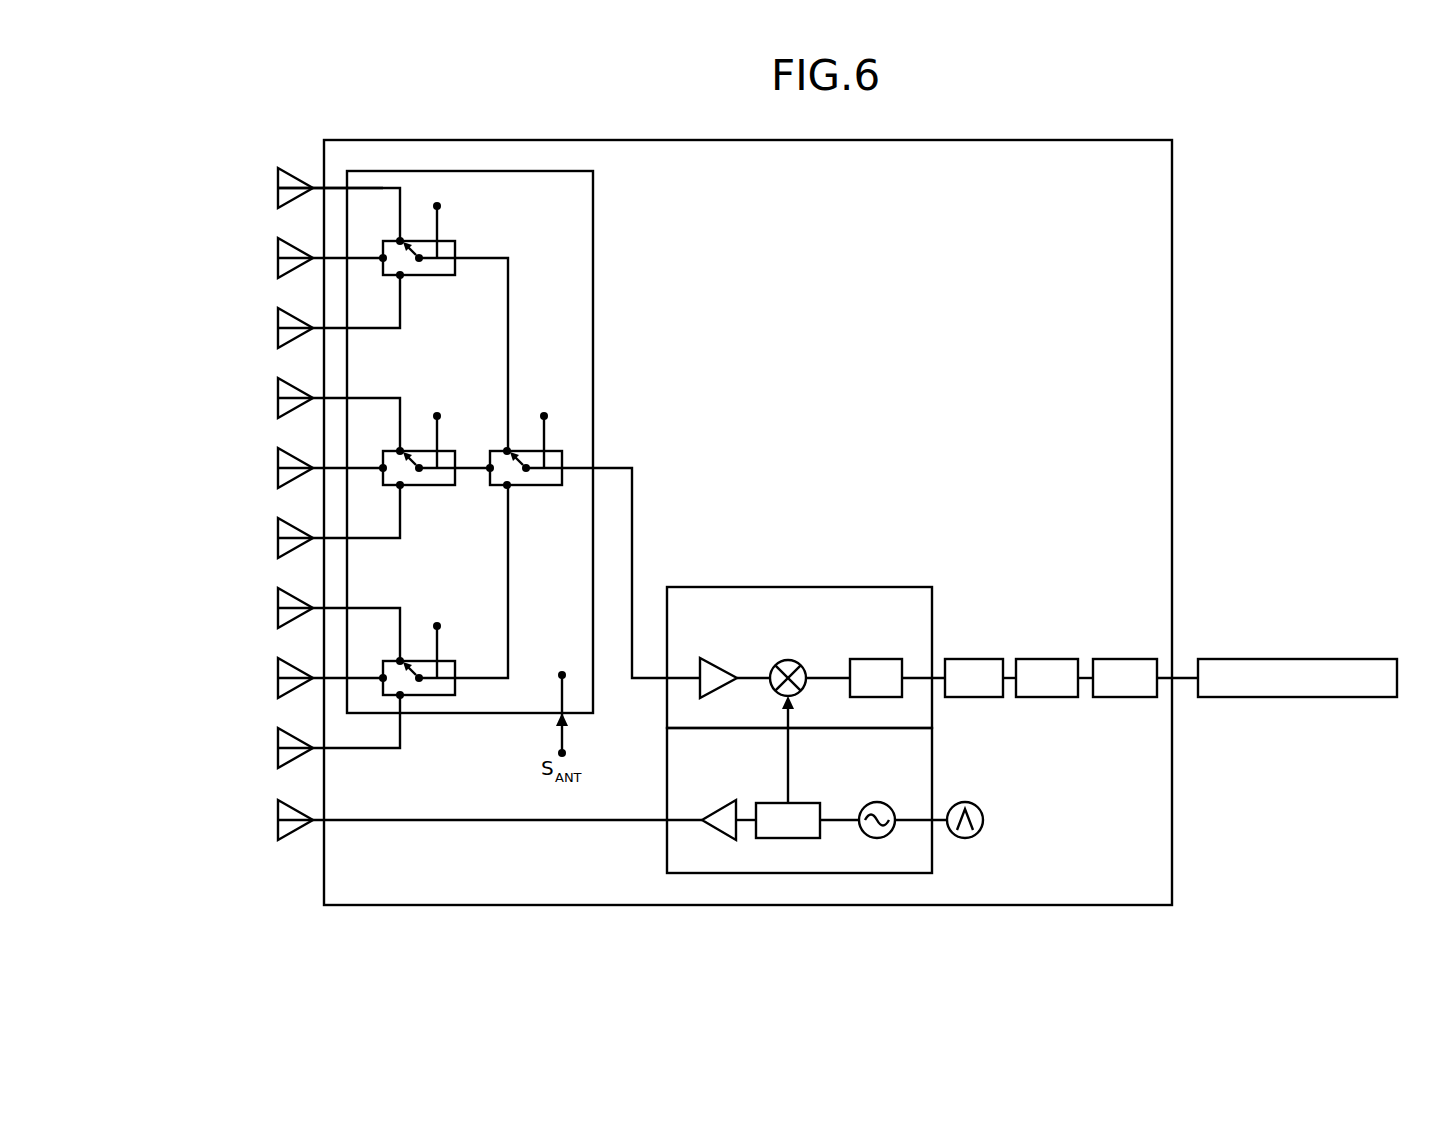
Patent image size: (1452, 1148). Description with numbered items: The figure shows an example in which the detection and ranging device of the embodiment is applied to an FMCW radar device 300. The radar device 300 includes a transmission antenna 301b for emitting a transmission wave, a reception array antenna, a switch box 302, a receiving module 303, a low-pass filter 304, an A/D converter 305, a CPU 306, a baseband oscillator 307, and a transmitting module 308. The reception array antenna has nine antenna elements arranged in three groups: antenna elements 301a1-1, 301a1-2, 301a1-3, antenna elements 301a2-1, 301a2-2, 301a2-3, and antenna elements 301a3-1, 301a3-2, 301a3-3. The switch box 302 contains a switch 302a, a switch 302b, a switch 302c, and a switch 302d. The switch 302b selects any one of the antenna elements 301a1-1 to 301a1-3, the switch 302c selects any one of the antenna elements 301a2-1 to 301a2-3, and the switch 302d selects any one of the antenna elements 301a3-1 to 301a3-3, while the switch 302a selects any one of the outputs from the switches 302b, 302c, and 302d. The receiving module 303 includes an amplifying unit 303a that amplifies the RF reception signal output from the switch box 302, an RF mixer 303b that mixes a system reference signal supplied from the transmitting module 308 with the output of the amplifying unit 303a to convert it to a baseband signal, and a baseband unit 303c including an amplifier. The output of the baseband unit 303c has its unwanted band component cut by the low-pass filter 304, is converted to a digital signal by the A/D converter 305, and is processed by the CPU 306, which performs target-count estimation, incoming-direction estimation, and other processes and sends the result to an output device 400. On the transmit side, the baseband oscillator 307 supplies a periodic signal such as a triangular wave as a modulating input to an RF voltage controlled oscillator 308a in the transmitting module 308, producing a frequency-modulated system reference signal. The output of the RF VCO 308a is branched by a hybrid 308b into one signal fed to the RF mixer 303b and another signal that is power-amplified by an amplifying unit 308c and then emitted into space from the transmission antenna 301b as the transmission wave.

The FMCW radar device 300 is at (1128, 140).
The switch box 302 is at (594, 220).
The switch 302a is at (546, 488).
The switch 302b is at (455, 690).
The switch 302c is at (438, 488).
The switch 302d is at (438, 278).
The antenna element 301a3-3 is at (278, 188).
The antenna element 301a3-2 is at (278, 258).
The antenna element 301a3-1 is at (278, 328).
The antenna element 301a2-3 is at (278, 398).
The antenna element 301a2-2 is at (278, 468).
The antenna element 301a2-1 is at (278, 538).
The antenna element 301a1-3 is at (278, 608).
The antenna element 301a1-2 is at (278, 678).
The antenna element 301a1-1 is at (278, 748).
The transmission antenna 301b is at (278, 820).
The receiving module 303 is at (934, 598).
The amplifying unit 303a is at (713, 698).
The RF mixer 303b is at (800, 694).
The baseband unit 303c is at (869, 697).
The low-pass filter 304 is at (968, 659).
The A/D converter 305 is at (1036, 659).
The CPU 306 is at (1106, 659).
The baseband oscillator 307 is at (975, 803).
The transmitting module 308 is at (934, 752).
The RF voltage controlled oscillator 308a is at (871, 802).
The hybrid 308b is at (795, 838).
The amplifying unit 308c is at (714, 838).
The output device 400 is at (1299, 659).